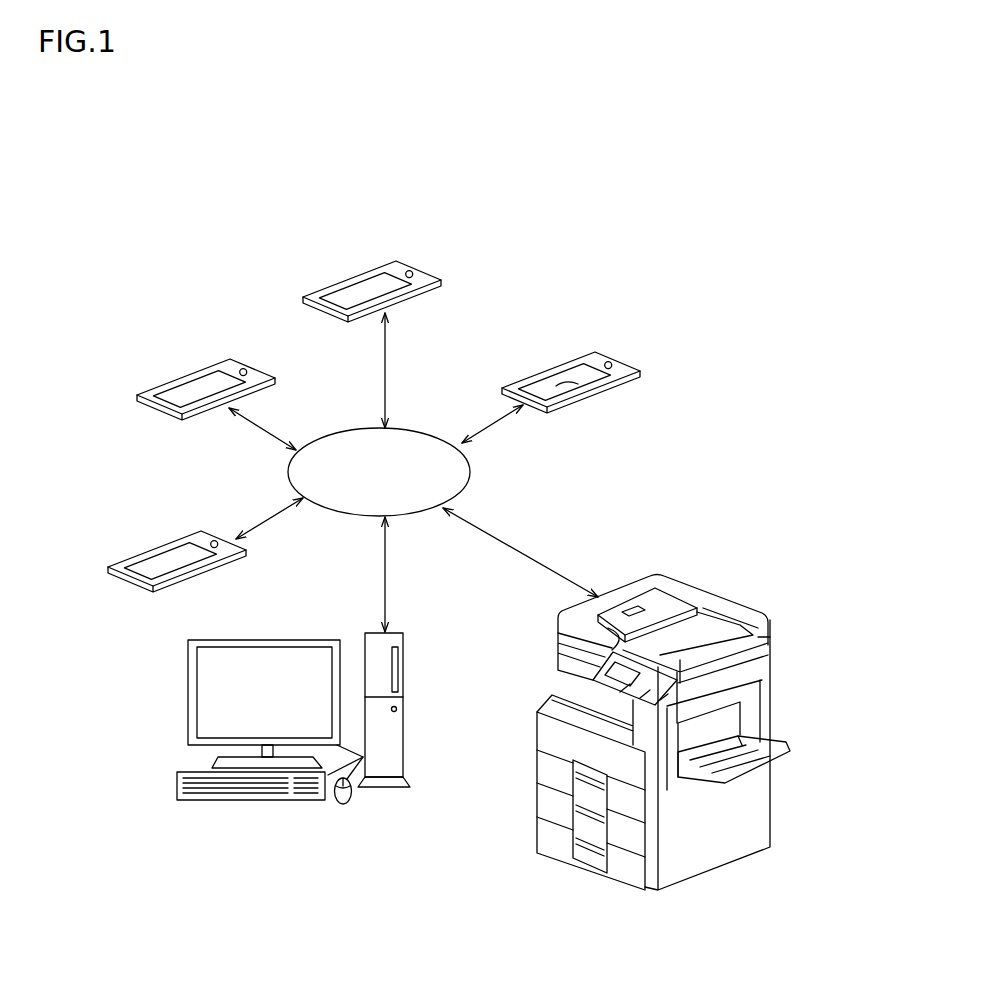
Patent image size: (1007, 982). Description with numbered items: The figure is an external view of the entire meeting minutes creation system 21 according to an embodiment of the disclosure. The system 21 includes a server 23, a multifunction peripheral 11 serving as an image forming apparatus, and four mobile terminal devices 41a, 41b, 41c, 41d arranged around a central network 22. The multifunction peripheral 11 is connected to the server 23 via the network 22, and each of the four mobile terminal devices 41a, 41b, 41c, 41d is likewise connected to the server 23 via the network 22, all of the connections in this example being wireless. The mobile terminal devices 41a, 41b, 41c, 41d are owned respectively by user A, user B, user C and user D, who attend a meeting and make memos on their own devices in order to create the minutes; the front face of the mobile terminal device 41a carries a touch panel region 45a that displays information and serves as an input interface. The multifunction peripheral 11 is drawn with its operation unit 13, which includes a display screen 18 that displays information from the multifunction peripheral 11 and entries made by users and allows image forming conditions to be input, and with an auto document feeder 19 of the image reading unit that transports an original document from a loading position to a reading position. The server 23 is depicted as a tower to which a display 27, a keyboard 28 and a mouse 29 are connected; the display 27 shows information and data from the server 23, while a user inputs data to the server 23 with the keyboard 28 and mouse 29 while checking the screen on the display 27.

The multifunction peripheral 11 is at (669, 705).
The operation unit 13 is at (579, 670).
The display screen 18 is at (597, 663).
The auto document feeder (ADF) 19 is at (683, 590).
The meeting minutes creation system 21 is at (712, 158).
The network 22 is at (472, 465).
The server 23 is at (383, 788).
The display 27 is at (243, 640).
The keyboard 28 is at (197, 802).
The mouse 29 is at (343, 807).
The mobile terminal device 41a is at (628, 342).
The mobile terminal device 41b is at (433, 259).
The mobile terminal device 41c is at (182, 347).
The mobile terminal device 41d is at (178, 523).
The display of mobile terminal 45a is at (600, 393).